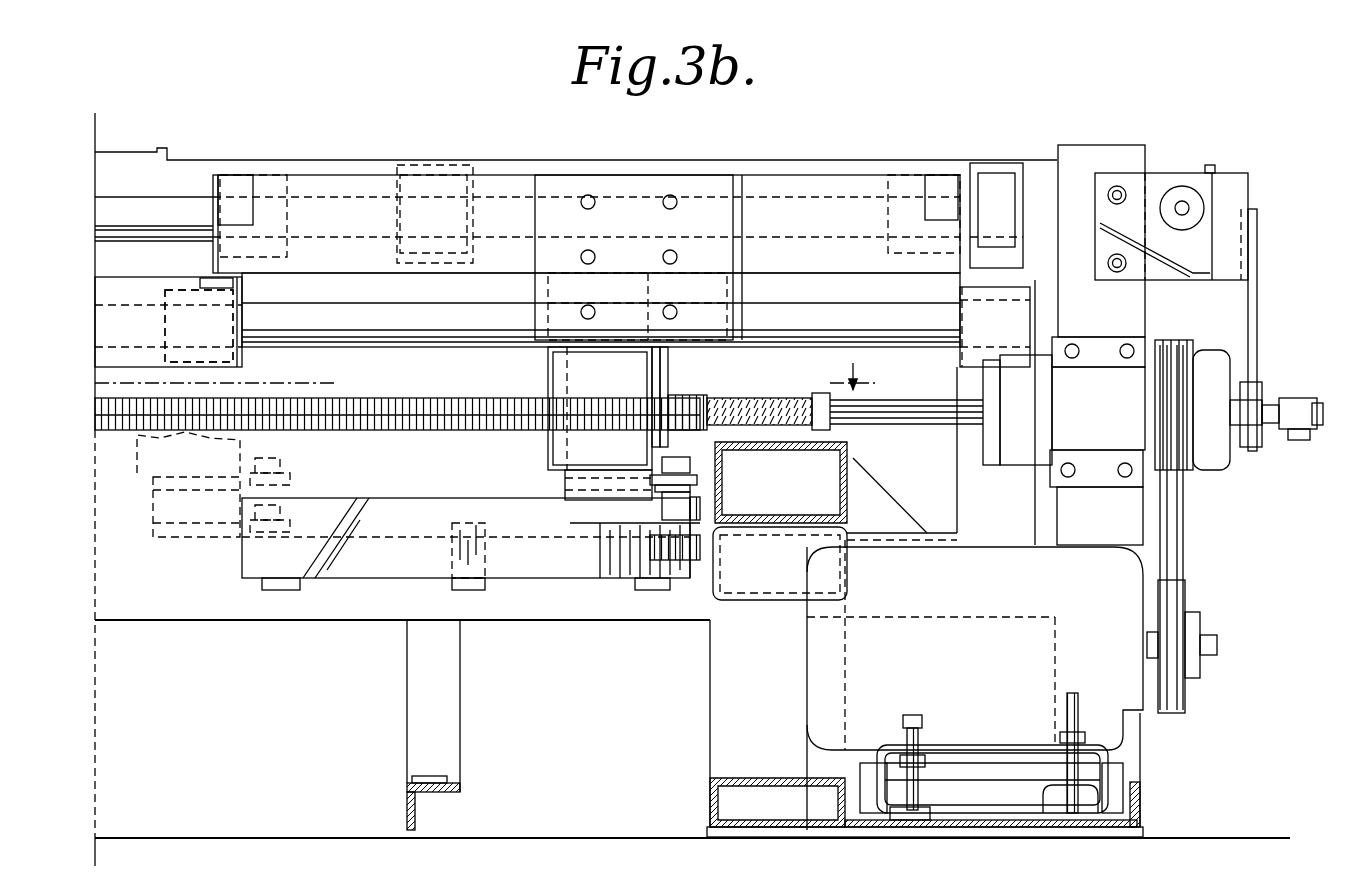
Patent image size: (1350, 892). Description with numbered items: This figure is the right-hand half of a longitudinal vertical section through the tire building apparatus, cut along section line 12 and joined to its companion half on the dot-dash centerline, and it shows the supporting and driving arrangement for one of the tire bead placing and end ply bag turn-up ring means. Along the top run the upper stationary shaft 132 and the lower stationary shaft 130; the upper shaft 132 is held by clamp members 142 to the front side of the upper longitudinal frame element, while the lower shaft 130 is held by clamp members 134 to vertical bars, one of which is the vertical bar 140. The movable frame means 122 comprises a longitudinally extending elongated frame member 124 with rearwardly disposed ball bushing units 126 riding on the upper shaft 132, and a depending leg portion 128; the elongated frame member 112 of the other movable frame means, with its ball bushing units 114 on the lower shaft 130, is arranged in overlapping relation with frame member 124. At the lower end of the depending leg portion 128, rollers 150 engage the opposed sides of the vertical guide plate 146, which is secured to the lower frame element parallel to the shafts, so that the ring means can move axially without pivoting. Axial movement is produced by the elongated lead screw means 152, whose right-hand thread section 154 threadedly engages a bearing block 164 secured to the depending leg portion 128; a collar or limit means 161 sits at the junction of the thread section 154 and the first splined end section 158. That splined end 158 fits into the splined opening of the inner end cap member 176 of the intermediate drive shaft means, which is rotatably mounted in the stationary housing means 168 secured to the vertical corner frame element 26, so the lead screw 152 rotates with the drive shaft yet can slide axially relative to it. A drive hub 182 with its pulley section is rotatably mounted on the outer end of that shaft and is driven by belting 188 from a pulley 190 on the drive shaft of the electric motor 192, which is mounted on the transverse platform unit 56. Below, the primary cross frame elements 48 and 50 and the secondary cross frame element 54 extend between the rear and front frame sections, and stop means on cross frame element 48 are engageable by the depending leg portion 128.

The section line / view direction arrow 12 is at (886, 380).
The vertical corner frame element 26 is at (1140, 165).
The primary cross frame element 48 is at (850, 503).
The primary cross frame element 50 is at (757, 778).
The secondary cross frame element 54 is at (407, 800).
The transverse platform unit 56 is at (1143, 802).
The elongated frame member 112 is at (160, 270).
The ball bushing units 114 is at (240, 362).
The movable frame means 122 is at (683, 170).
The elongated frame member 124 is at (503, 180).
The ball bushing units 126 is at (270, 178).
The depending leg portion 128 is at (160, 512).
The lower stationary shaft 130 is at (368, 338).
The upper stationary shaft 132 is at (165, 193).
The clamp members 134 is at (960, 290).
The vertical bar 140 is at (958, 490).
The clamp members 142 is at (430, 170).
The vertical guide plate 146 is at (398, 508).
The rollers 150 is at (715, 492).
The lead screw means 152 is at (376, 394).
The right-hand thread section 154 is at (497, 384).
The first splined end section 158 is at (885, 425).
The collar or limit means 161 is at (825, 395).
The bearing block 164 is at (700, 378).
The stationary housing means 168 is at (1100, 352).
The inner end cap member 176 is at (995, 462).
The drive hub 182 is at (1205, 357).
The belting 188 is at (1172, 533).
The pulley 190 is at (1190, 585).
The electric motor 192 is at (990, 668).